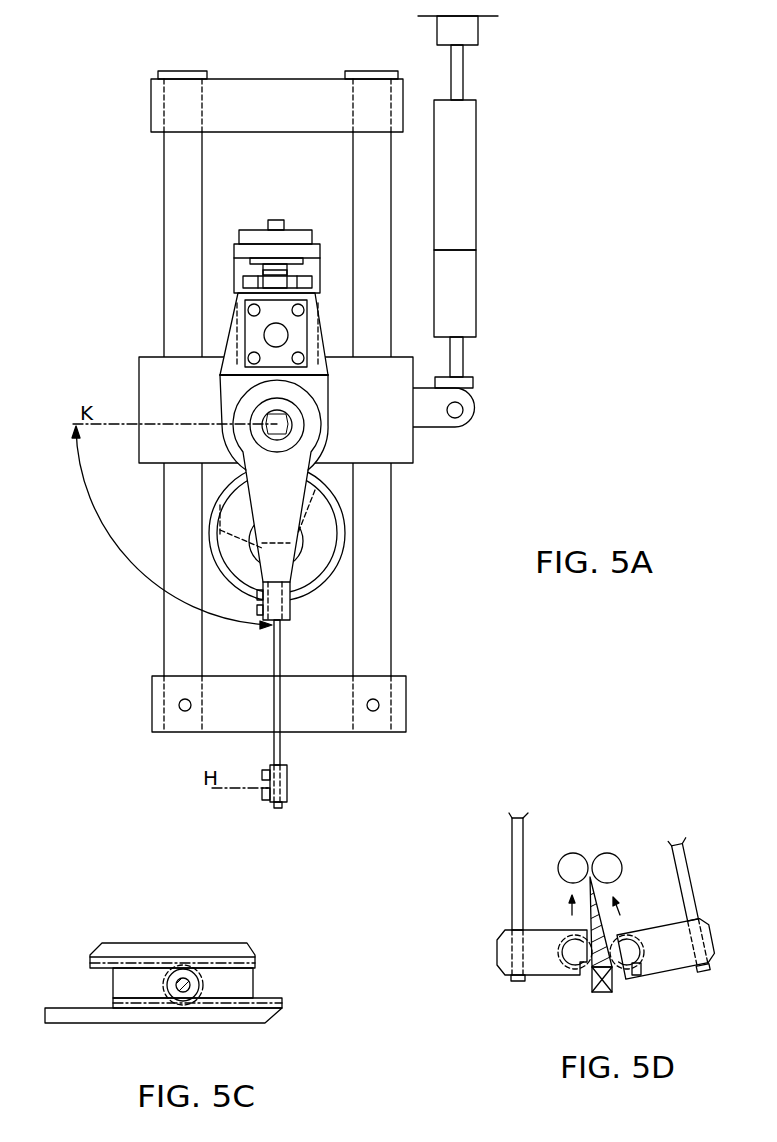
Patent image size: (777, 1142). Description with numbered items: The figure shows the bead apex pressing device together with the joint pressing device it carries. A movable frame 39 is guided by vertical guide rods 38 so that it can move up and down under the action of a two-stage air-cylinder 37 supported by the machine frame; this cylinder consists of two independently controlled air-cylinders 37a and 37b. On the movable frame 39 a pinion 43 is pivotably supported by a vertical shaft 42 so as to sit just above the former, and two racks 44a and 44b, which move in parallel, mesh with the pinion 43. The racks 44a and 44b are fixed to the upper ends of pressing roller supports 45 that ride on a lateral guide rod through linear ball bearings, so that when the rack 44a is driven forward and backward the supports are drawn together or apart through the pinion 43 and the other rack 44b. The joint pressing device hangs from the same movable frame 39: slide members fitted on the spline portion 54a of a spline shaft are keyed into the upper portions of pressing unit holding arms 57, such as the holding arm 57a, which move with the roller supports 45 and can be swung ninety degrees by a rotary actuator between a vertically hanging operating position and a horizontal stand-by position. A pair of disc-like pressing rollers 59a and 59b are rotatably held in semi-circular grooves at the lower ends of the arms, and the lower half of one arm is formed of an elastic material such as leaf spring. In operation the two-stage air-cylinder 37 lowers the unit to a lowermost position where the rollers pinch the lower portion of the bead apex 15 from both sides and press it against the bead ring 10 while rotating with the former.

In FIG. 5A, the two-stage air-cylinder 37 is at (498, 196).
In FIG. 5A, the air-cylinder 37a is at (462, 209).
In FIG. 5A, the air-cylinder 37b is at (462, 280).
In FIG. 5A, the vertical guide rods 38 is at (163, 180).
In FIG. 5A, the movable frame 39 is at (160, 443).
In FIG. 5C, the vertical shaft 42 is at (182, 980).
In FIG. 5A, the pinion 43 is at (253, 282).
In FIG. 5C, the pinion 43 is at (207, 985).
In FIG. 5A, the rack 44a is at (237, 297).
In FIG. 5C, the rack 44a is at (238, 1015).
In FIG. 5A, the rack 44b is at (305, 282).
In FIG. 5C, the rack 44b is at (233, 955).
In FIG. 5A, the pressing roller supports 45 is at (323, 447).
In FIG. 5A, the spline portion 54a is at (262, 437).
In FIG. 5A, the pressing unit holding arms 57 is at (277, 475).
In FIG. 5A, the pressing unit holding arm 57a is at (282, 753).
In FIG. 5D, the bead apex 15 is at (588, 917).
In FIG. 5D, the pressing roller 59a is at (572, 957).
In FIG. 5D, the pressing roller 59b is at (632, 955).
In FIG. 5D, the bead ring 10 is at (603, 992).